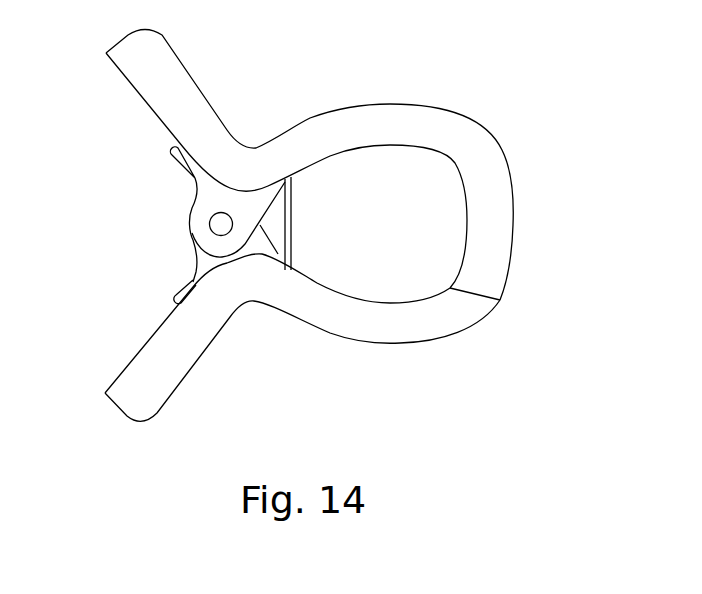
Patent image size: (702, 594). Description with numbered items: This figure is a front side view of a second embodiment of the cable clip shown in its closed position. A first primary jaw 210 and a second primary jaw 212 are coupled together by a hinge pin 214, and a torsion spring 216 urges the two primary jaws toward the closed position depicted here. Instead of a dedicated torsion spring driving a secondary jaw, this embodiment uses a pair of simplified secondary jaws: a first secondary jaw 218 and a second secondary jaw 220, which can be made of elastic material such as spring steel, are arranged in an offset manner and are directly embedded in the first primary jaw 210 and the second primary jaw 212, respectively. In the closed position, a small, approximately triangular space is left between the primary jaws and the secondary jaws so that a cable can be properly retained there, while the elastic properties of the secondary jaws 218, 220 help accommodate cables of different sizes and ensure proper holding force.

The first primary jaw 210 is at (457, 127).
The second primary jaw 212 is at (435, 323).
The hinge pin 214 is at (214, 226).
The torsion spring 216 is at (180, 156).
The first secondary jaw 218 is at (292, 187).
The second secondary jaw 220 is at (292, 270).